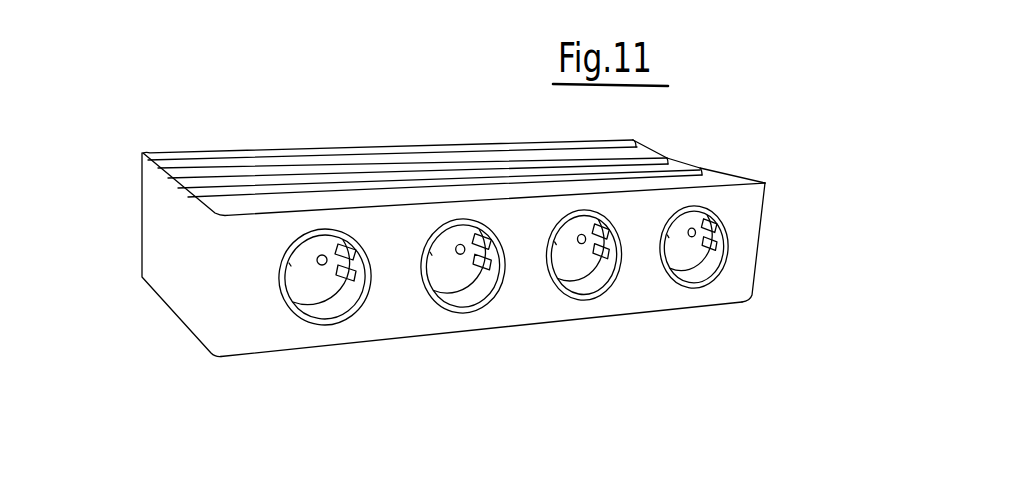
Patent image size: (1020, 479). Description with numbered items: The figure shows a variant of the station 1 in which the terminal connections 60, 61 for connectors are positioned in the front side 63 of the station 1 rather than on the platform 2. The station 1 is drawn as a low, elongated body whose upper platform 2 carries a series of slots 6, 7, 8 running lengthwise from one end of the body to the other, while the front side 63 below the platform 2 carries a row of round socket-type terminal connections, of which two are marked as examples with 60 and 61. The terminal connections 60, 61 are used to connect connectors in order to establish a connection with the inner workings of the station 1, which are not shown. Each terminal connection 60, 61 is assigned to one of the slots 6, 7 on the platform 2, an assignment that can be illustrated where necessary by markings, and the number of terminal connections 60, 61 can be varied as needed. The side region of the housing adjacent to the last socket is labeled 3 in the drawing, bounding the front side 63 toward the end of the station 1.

The station 1 is at (750, 240).
The platform 2 is at (732, 178).
The side wall of housing 3 is at (737, 290).
The slot 6 is at (143, 161).
The slot 7 is at (180, 183).
The third groove on top surface 8 is at (187, 190).
The terminal connection 60 is at (338, 302).
The terminal connection 61 is at (472, 290).
The front side 63 is at (272, 333).